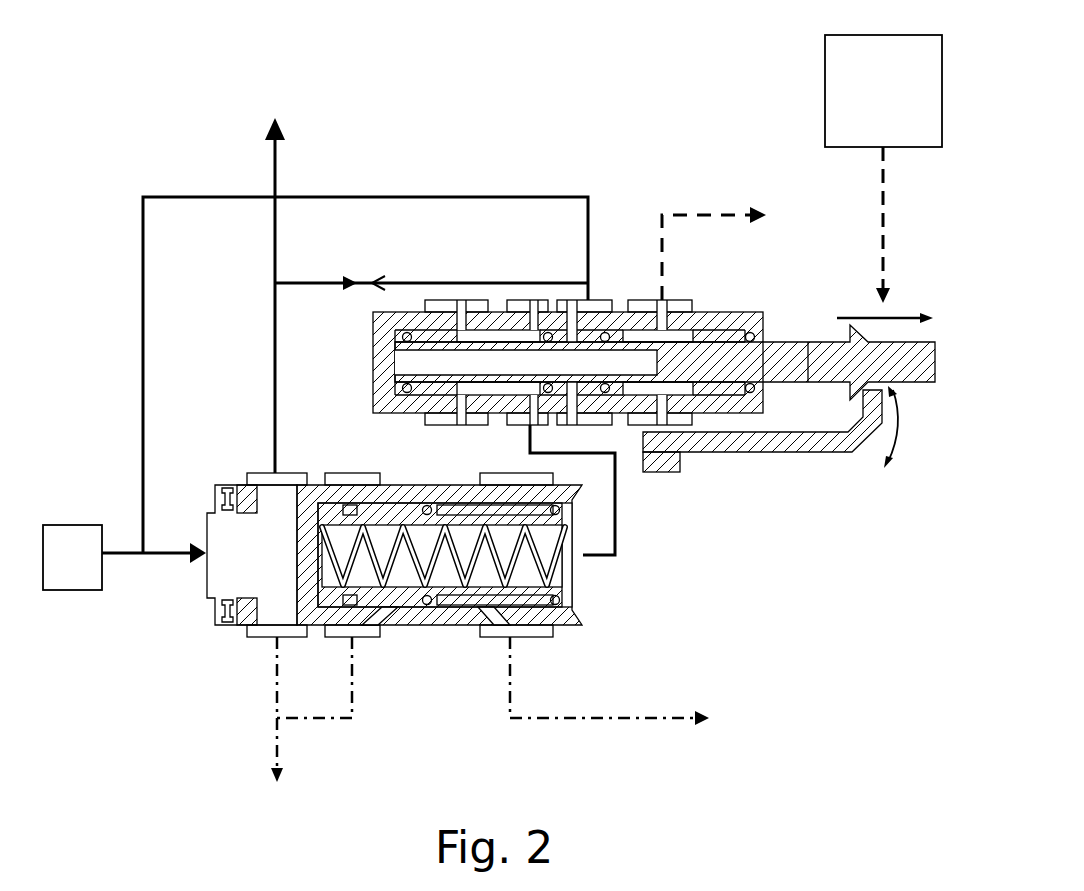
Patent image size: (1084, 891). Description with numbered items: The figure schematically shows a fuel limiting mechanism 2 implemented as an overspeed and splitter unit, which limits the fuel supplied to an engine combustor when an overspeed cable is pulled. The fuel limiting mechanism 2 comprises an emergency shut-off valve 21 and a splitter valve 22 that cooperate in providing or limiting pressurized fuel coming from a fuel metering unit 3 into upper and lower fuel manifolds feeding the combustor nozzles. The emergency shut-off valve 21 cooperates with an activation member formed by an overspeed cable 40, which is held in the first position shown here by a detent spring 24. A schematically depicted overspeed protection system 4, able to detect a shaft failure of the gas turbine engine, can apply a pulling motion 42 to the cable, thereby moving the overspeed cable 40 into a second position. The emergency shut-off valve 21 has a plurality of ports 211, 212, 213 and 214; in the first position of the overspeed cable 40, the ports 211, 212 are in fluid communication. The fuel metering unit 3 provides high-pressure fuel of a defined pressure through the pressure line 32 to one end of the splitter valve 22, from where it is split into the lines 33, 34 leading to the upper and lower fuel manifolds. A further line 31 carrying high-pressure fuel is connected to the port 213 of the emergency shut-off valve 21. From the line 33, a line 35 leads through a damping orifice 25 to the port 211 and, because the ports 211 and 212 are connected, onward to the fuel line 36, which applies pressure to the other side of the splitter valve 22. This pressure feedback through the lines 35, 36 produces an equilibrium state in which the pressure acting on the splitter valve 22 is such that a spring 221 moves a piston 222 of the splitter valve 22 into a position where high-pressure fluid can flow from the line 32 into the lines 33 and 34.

The fuel limiting mechanism 2 is at (508, 156).
The fuel metering unit 3 is at (75, 592).
The overspeed protection system 4 is at (825, 85).
The emergency shut-off valve 21 is at (617, 312).
The port 211 is at (465, 300).
The port 212 is at (528, 300).
The port 213 is at (580, 300).
The port 214 is at (683, 300).
The splitter valve 22 is at (440, 632).
The spring 221 is at (555, 565).
The piston 222 is at (393, 595).
The detent spring 24 is at (773, 452).
The damping orifice 25 is at (373, 283).
The line 31 is at (141, 357).
The pressure line 32 is at (178, 557).
The line 33 is at (277, 373).
The line 34 is at (277, 683).
The line 35 is at (303, 283).
The fuel line 36 is at (615, 512).
The overspeed cable 40 is at (913, 383).
The pulling motion 42 is at (905, 318).